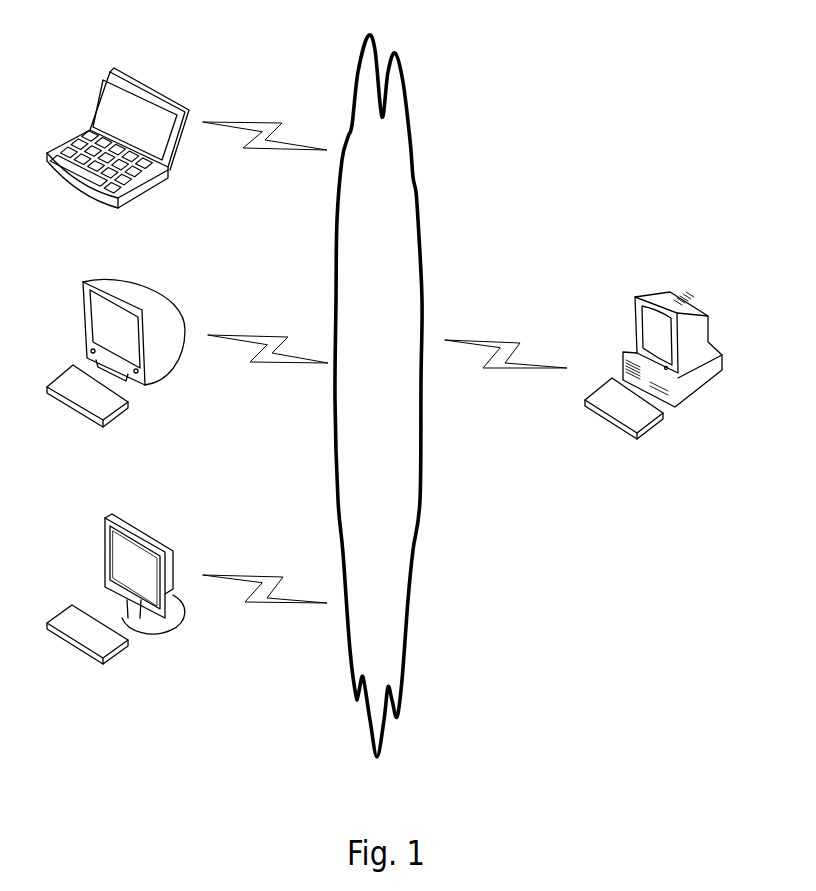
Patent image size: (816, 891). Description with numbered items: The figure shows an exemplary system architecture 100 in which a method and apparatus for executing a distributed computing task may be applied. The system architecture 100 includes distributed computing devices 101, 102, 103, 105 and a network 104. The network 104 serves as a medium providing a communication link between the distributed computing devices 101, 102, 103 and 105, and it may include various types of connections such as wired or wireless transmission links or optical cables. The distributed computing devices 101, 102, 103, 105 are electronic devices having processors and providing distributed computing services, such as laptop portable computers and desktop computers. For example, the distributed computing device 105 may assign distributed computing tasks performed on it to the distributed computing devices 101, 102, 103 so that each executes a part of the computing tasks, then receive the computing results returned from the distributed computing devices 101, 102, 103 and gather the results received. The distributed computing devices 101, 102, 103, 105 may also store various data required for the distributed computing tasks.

The system architecture 100 is at (711, 71).
The distributed computing device 101 is at (116, 600).
The distributed computing device 102 is at (116, 371).
The distributed computing device 103 is at (118, 155).
The network 104 is at (378, 396).
The distributed computing device 105 is at (653, 376).